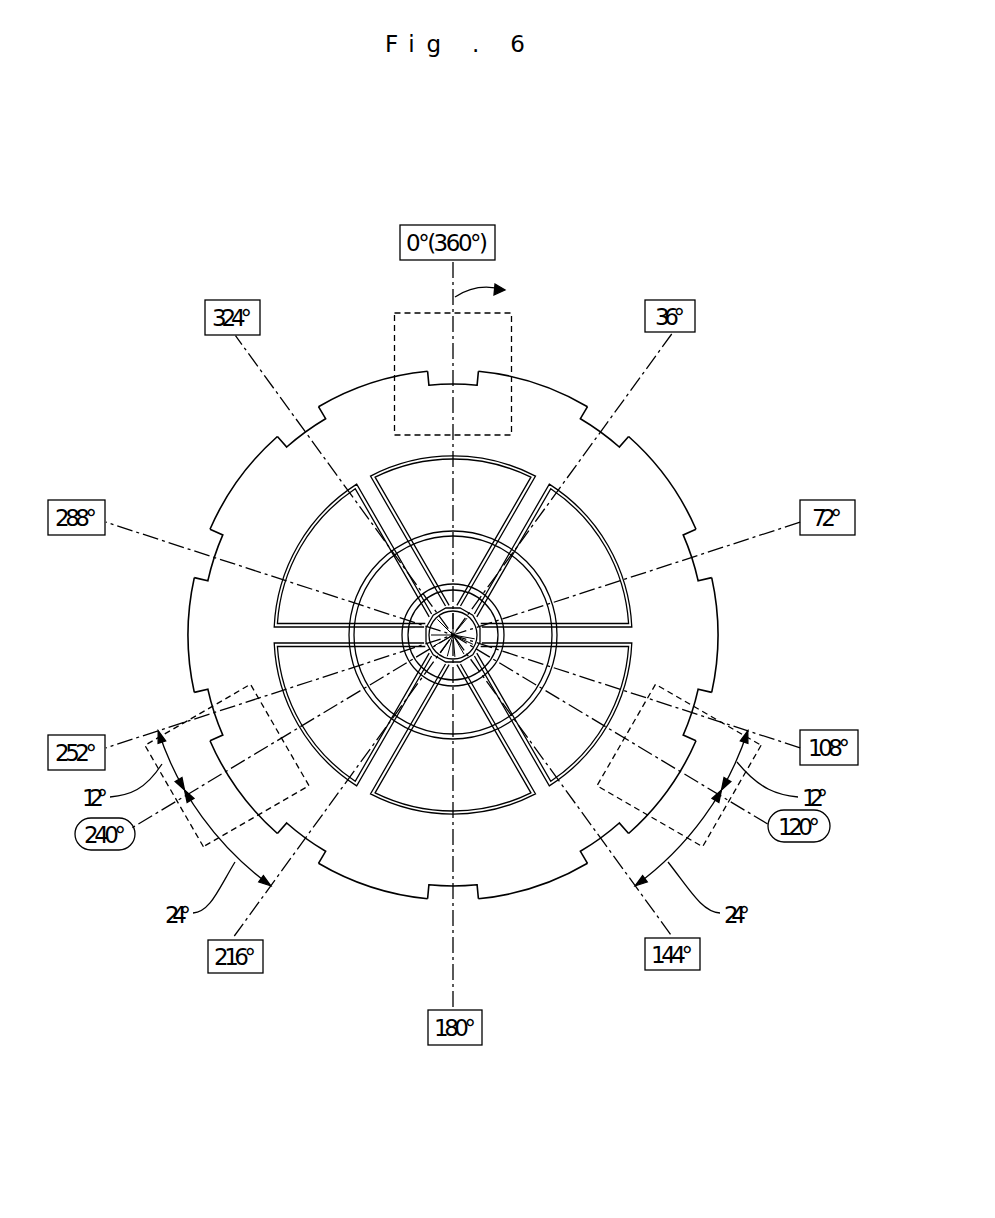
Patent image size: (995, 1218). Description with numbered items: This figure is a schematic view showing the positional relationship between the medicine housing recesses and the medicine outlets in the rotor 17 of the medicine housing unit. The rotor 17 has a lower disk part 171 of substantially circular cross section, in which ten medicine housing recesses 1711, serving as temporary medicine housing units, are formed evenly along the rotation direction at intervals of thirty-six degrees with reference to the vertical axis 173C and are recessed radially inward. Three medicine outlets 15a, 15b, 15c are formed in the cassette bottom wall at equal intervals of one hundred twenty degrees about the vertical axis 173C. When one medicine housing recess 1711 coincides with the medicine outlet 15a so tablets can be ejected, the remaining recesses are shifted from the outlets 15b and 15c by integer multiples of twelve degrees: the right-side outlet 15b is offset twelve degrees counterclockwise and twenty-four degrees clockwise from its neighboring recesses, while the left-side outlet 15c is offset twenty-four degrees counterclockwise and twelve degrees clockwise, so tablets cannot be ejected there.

The medicine outlet 15a is at (514, 318).
The medicine outlet 15b is at (738, 768).
The medicine outlet 15c is at (190, 822).
The rotor 17 is at (434, 635).
The lower disk part 171 is at (373, 389).
The medicine housing recess 1711 is at (432, 376).
The vertical axis 173C is at (452, 638).